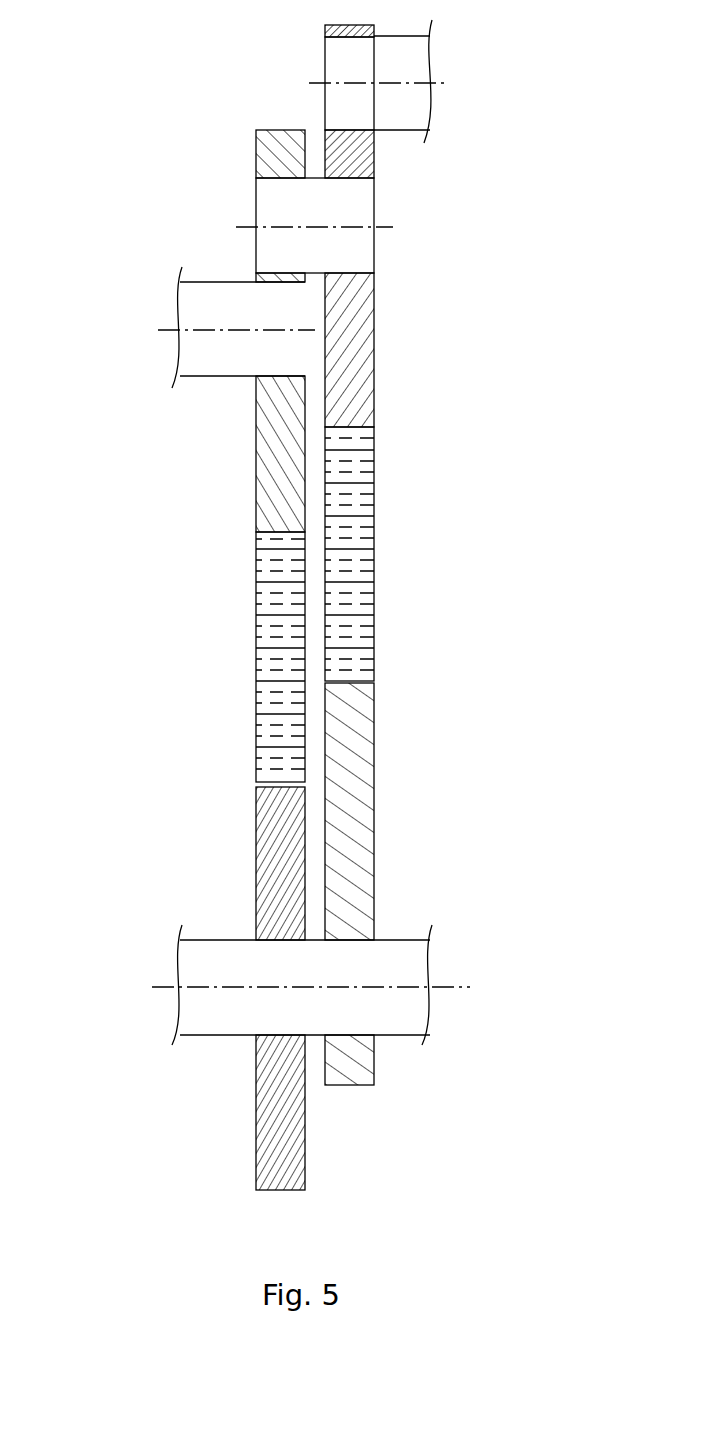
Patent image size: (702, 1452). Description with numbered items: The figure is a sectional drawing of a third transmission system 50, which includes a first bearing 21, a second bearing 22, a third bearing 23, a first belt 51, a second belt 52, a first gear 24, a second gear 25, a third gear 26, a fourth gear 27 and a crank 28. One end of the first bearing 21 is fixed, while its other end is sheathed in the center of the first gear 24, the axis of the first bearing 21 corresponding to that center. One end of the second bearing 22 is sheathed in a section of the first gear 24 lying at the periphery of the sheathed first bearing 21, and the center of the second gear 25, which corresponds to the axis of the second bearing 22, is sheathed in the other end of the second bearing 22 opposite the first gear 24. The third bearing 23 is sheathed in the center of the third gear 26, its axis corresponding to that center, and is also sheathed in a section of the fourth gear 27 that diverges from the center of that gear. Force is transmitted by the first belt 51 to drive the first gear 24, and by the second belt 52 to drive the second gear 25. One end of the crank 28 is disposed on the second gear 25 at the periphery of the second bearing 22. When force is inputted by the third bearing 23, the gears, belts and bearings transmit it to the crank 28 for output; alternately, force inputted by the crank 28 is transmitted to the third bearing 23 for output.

The transmission system 50 is at (200, 65).
The first bearing 21 is at (190, 307).
The second bearing 22 is at (362, 212).
The third bearing 23 is at (415, 965).
The first gear 24 is at (265, 478).
The second gear 25 is at (365, 350).
The third gear 26 is at (262, 855).
The fourth gear 27 is at (365, 835).
The crank 28 is at (407, 62).
The first belt 51 is at (268, 640).
The second belt 52 is at (365, 527).